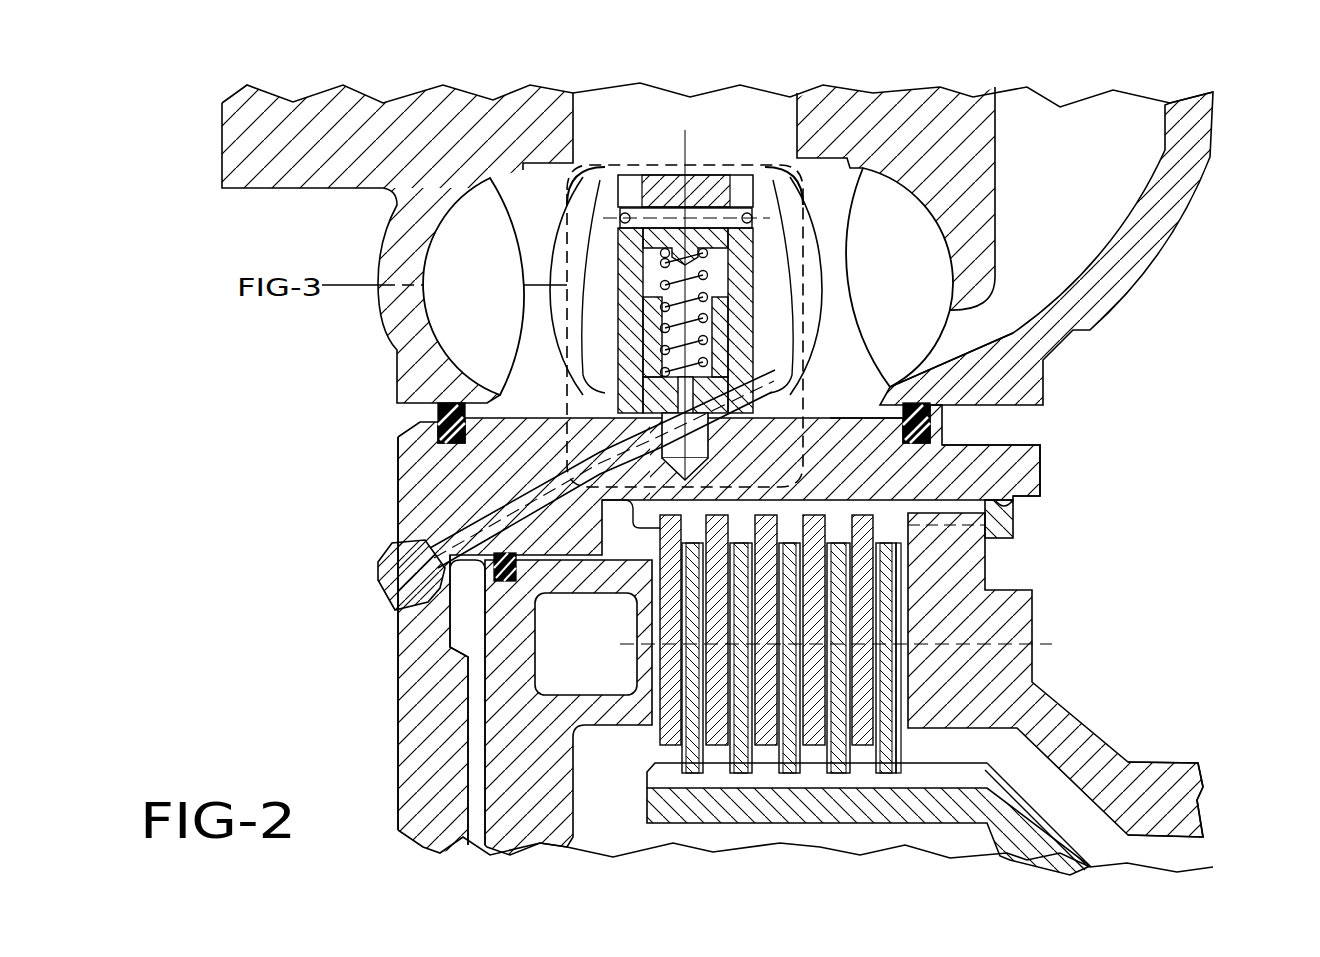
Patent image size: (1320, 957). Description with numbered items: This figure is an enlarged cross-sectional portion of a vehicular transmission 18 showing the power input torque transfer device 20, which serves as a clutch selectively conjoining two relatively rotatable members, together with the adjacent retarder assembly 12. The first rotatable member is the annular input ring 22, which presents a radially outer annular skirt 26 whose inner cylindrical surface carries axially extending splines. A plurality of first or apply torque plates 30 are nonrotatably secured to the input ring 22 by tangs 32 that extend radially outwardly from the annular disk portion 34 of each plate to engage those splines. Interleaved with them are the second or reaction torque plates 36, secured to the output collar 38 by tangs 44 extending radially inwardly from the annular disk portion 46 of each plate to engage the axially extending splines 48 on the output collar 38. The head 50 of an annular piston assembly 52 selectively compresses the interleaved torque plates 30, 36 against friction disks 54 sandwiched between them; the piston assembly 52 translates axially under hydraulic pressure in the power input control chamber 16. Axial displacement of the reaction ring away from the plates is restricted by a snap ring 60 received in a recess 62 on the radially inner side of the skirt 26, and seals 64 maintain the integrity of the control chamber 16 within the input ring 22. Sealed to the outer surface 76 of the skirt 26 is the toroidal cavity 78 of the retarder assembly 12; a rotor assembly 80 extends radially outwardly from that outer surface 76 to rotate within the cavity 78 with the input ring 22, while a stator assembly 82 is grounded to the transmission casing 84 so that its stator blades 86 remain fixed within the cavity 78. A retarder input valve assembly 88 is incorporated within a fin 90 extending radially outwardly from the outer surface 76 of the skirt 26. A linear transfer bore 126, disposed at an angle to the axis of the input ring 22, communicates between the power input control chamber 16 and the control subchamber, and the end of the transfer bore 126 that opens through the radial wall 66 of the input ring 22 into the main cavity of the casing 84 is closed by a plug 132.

The retarder assembly 12 is at (997, 148).
The transmission casing 84 is at (1197, 126).
The stator blades 86 is at (915, 258).
The stator assembly 82 is at (950, 337).
The toroidal cavity 78 is at (834, 222).
The annular input ring 22 is at (396, 700).
The radial wall 66 is at (427, 752).
The power input control chamber 16 is at (477, 797).
The annular piston assembly 52 is at (572, 750).
The head 50 is at (653, 557).
The seals 64 is at (493, 580).
The outer surface 76 is at (841, 418).
The radially outer annular skirt 26 is at (1018, 457).
The recess 62 is at (1003, 497).
The snap ring 60 is at (1005, 540).
The power input torque transfer device 20 is at (1046, 618).
The vehicular transmission 18 is at (1207, 800).
The second or reaction torque plates 36 is at (850, 690).
The axially extending splines 48 is at (921, 775).
The output collar 38 is at (984, 824).
The first or apply torque plates 30 is at (717, 747).
The annular disk portion 34 is at (716, 690).
The tangs 44 is at (788, 767).
The annular disk portion 46 is at (790, 573).
The friction disks 54 is at (858, 764).
The tangs 32 is at (817, 517).
The rotor assembly 80 is at (759, 173).
The retarder input valve assembly 88 is at (672, 163).
The fin 90 is at (627, 188).
The transfer bore 126 is at (497, 522).
The plug 132 is at (378, 562).